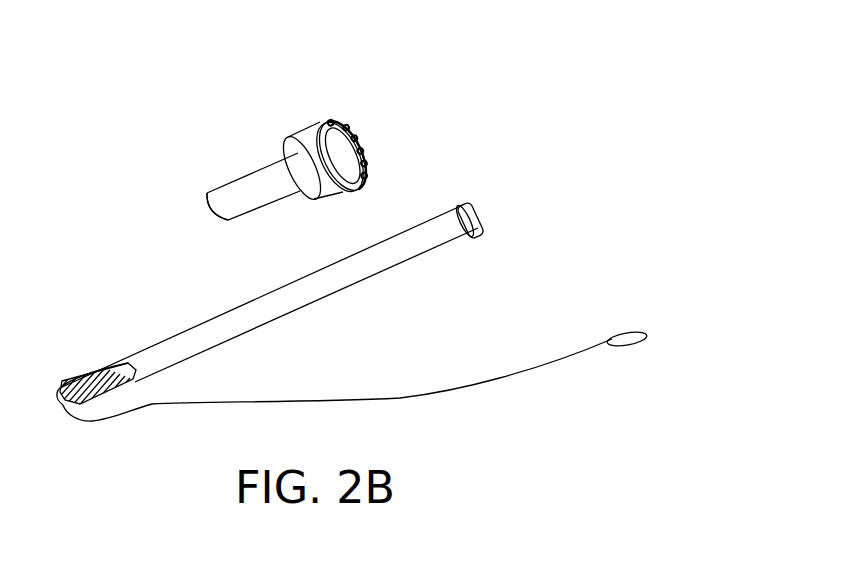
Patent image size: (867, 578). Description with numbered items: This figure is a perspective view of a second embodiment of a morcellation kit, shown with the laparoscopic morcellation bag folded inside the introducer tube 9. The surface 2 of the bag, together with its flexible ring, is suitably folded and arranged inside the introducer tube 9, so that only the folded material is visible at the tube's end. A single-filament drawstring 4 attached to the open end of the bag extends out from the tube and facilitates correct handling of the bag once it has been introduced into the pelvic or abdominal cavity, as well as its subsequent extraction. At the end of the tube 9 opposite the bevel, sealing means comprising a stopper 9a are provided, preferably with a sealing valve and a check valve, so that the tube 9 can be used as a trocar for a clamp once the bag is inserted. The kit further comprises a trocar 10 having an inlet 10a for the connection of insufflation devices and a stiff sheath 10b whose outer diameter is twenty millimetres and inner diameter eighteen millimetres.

The surface 2 is at (84, 381).
The single-filament drawstring 4 is at (493, 383).
The introducer tube 9 is at (387, 262).
The stopper 9a is at (474, 210).
The trocar 10 is at (257, 172).
The inlet 10a is at (315, 132).
The stiff sheath 10b is at (223, 202).